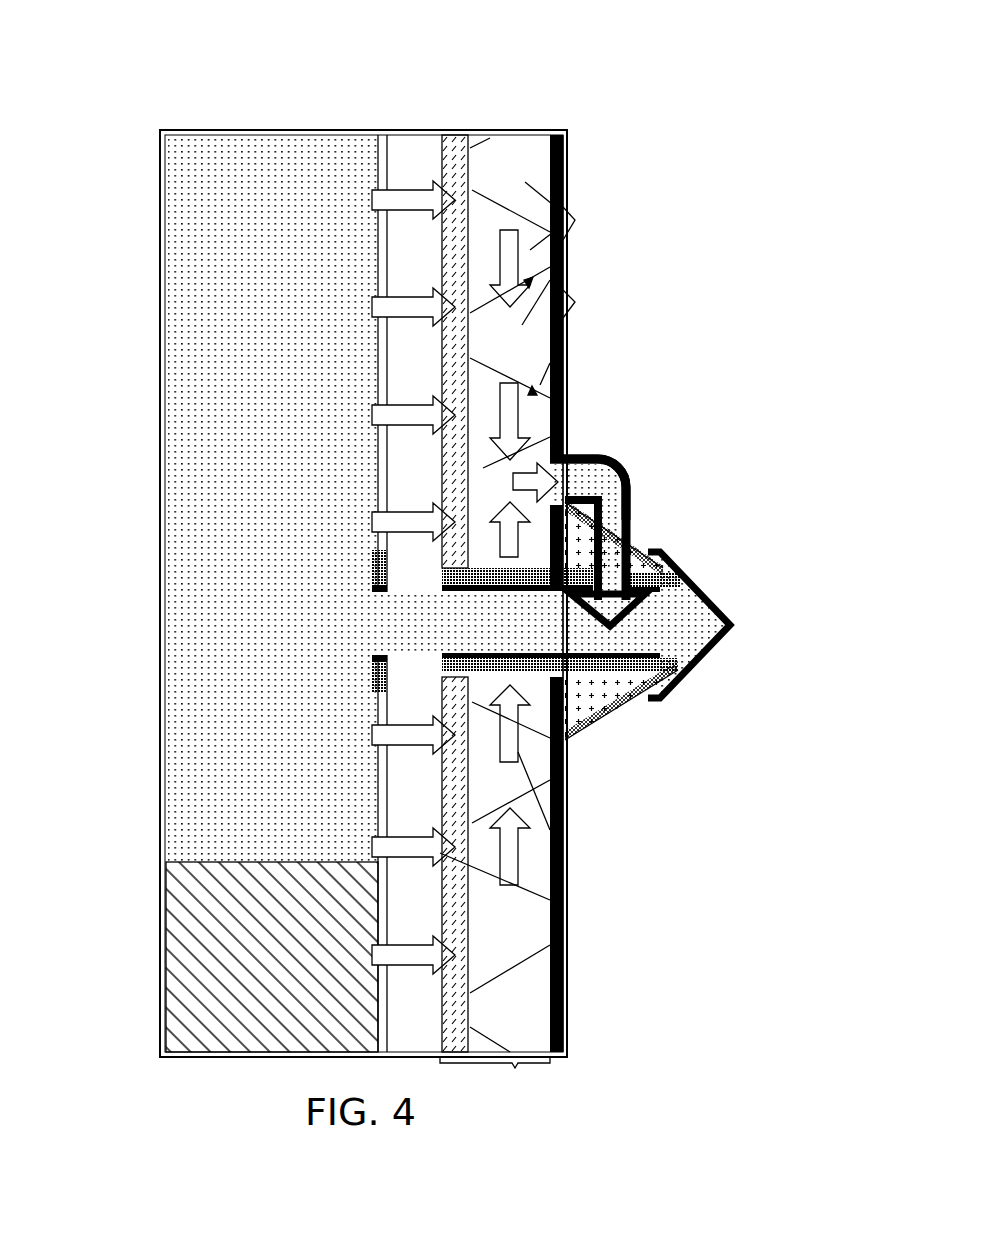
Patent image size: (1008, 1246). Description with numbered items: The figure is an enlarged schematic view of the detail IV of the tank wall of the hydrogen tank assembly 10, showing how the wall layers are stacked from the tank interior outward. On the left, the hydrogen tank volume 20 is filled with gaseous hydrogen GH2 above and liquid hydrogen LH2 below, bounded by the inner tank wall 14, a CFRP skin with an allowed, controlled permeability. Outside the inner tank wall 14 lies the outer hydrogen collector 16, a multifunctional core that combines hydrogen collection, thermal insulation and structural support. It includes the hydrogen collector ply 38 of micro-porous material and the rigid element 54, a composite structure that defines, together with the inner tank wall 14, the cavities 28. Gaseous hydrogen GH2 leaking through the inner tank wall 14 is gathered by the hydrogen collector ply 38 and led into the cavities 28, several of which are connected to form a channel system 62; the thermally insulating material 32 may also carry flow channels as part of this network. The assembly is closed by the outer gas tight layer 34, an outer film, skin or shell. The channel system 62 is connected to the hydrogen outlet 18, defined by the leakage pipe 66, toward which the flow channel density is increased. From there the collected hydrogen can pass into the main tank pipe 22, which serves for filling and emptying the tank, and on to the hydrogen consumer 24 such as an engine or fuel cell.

The hydrogen tank assembly 10 is at (114, 290).
The inner tank wall 14 is at (410, 150).
The outer hydrogen collector 16 is at (515, 1068).
The hydrogen outlet 18 is at (600, 457).
The hydrogen tank volume 20 is at (252, 165).
The main tank pipe 22 is at (618, 707).
The hydrogen consumer 24 is at (711, 625).
The cavity 28 is at (575, 220).
The thermally insulating material 32 is at (553, 1012).
The gas tight layer 34 is at (562, 130).
The hydrogen collector ply 38 is at (458, 165).
The rigid element 54 is at (537, 167).
The channel system 62 is at (575, 302).
The leakage pipe 66 is at (623, 503).
The gaseous hydrogen GH2 is at (193, 628).
The liquid hydrogen LH2 is at (185, 933).
The detail IV is at (463, 1108).